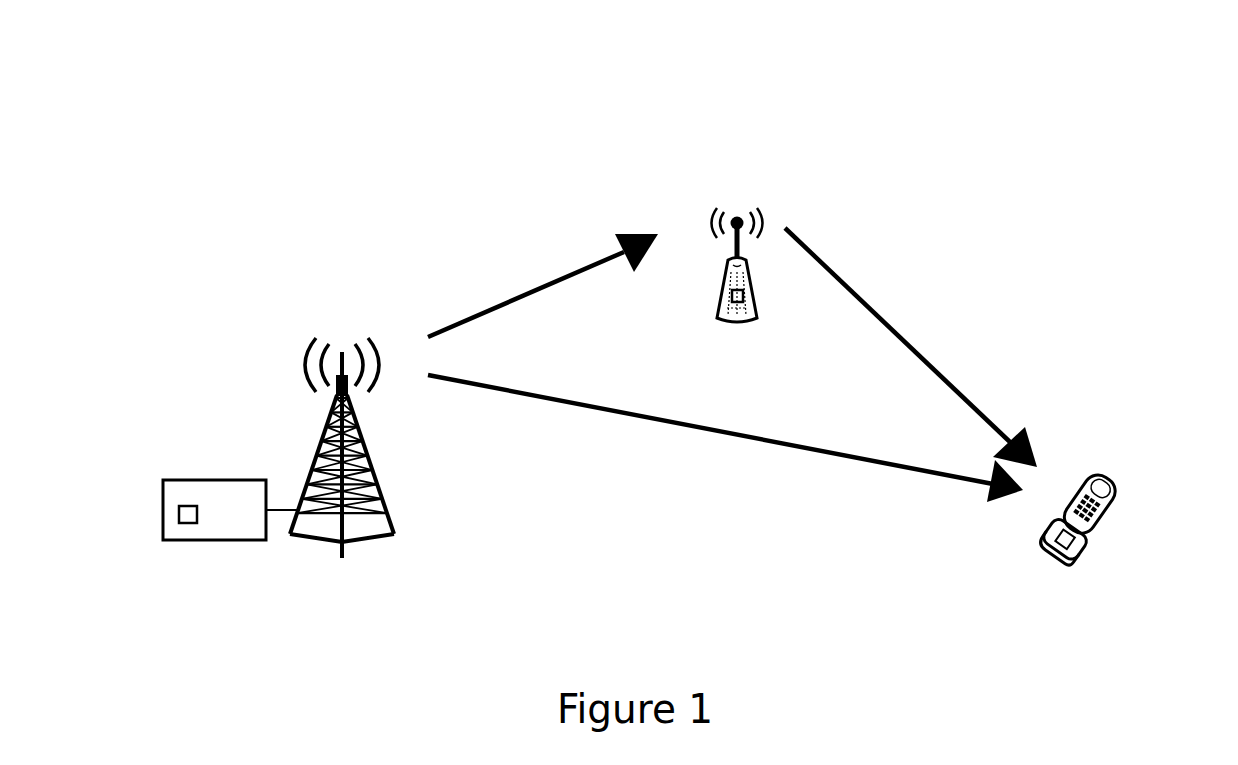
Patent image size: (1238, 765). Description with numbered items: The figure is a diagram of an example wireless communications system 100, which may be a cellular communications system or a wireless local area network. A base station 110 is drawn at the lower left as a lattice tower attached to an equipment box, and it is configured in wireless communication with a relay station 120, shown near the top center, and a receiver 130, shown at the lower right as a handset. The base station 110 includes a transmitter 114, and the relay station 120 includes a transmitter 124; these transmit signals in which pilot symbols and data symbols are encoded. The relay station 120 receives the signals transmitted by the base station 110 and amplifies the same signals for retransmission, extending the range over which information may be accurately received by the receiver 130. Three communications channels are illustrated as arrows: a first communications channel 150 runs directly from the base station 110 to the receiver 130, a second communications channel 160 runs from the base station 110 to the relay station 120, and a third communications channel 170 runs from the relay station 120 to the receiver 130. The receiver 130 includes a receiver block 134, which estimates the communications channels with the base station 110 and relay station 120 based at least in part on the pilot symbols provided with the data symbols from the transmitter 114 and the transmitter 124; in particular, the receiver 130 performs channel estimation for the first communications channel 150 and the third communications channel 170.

The wireless communications system 100 is at (1183, 74).
The base station 110 is at (301, 462).
The transmitter 114 is at (180, 516).
The relay station 120 is at (735, 207).
The transmitter 124 is at (745, 296).
The receiver 130 is at (1135, 500).
The receiver block 134 is at (1080, 545).
The first communications channel 150 is at (757, 438).
The second communications channel 160 is at (497, 305).
The third communications channel 170 is at (895, 331).